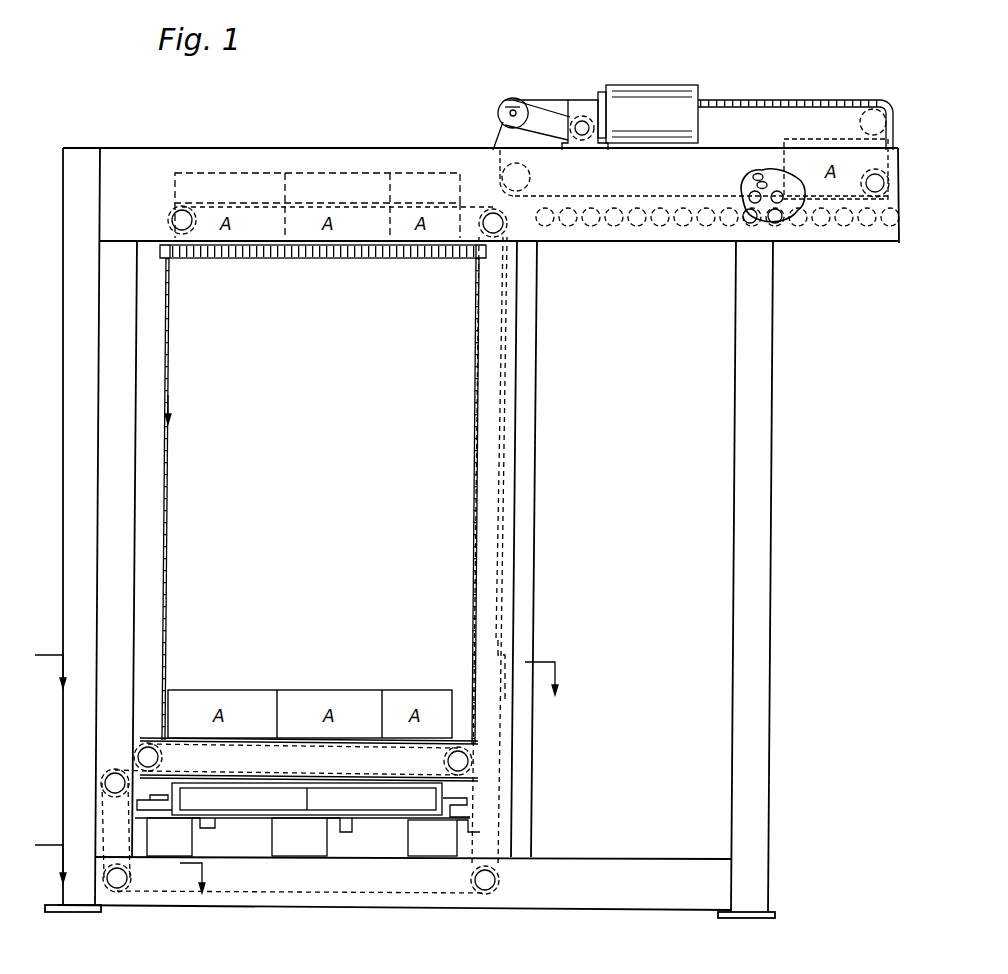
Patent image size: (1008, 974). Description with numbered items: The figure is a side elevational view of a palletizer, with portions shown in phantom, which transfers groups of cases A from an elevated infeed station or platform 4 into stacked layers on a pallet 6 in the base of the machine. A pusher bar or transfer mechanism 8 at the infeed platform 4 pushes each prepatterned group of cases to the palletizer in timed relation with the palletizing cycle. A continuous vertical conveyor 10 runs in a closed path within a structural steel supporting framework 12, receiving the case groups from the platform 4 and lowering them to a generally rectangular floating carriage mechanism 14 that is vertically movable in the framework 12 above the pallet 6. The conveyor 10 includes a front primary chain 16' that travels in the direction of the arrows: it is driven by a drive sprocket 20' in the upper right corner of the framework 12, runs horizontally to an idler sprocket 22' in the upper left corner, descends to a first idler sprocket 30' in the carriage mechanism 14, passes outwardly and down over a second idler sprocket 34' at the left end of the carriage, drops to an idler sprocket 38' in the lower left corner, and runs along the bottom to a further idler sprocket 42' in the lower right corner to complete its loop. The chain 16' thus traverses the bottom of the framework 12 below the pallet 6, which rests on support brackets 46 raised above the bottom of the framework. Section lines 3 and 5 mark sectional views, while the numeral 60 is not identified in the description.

The section line 3- 3 is at (294, 689).
The infeed station or platform 4 is at (641, 226).
The section line 5- 5 is at (127, 874).
The pallet 6 is at (303, 800).
The pusher bar or transfer mechanism 8 is at (783, 192).
The continuous vertical conveyor 10 is at (162, 468).
The structural steel supporting framework 12 is at (472, 533).
The floating carriage mechanism 14 is at (470, 762).
The primary chain 16' is at (320, 501).
The drive sprocket 20' is at (531, 241).
The idler sprocket 22' is at (154, 213).
The first idler sprocket 30' is at (130, 756).
The second idler sprocket 34' is at (94, 783).
The idler sprocket 38' is at (127, 898).
The idler sprocket 42' is at (512, 880).
The support brackets 46 is at (307, 825).
The chain 60 is at (258, 262).